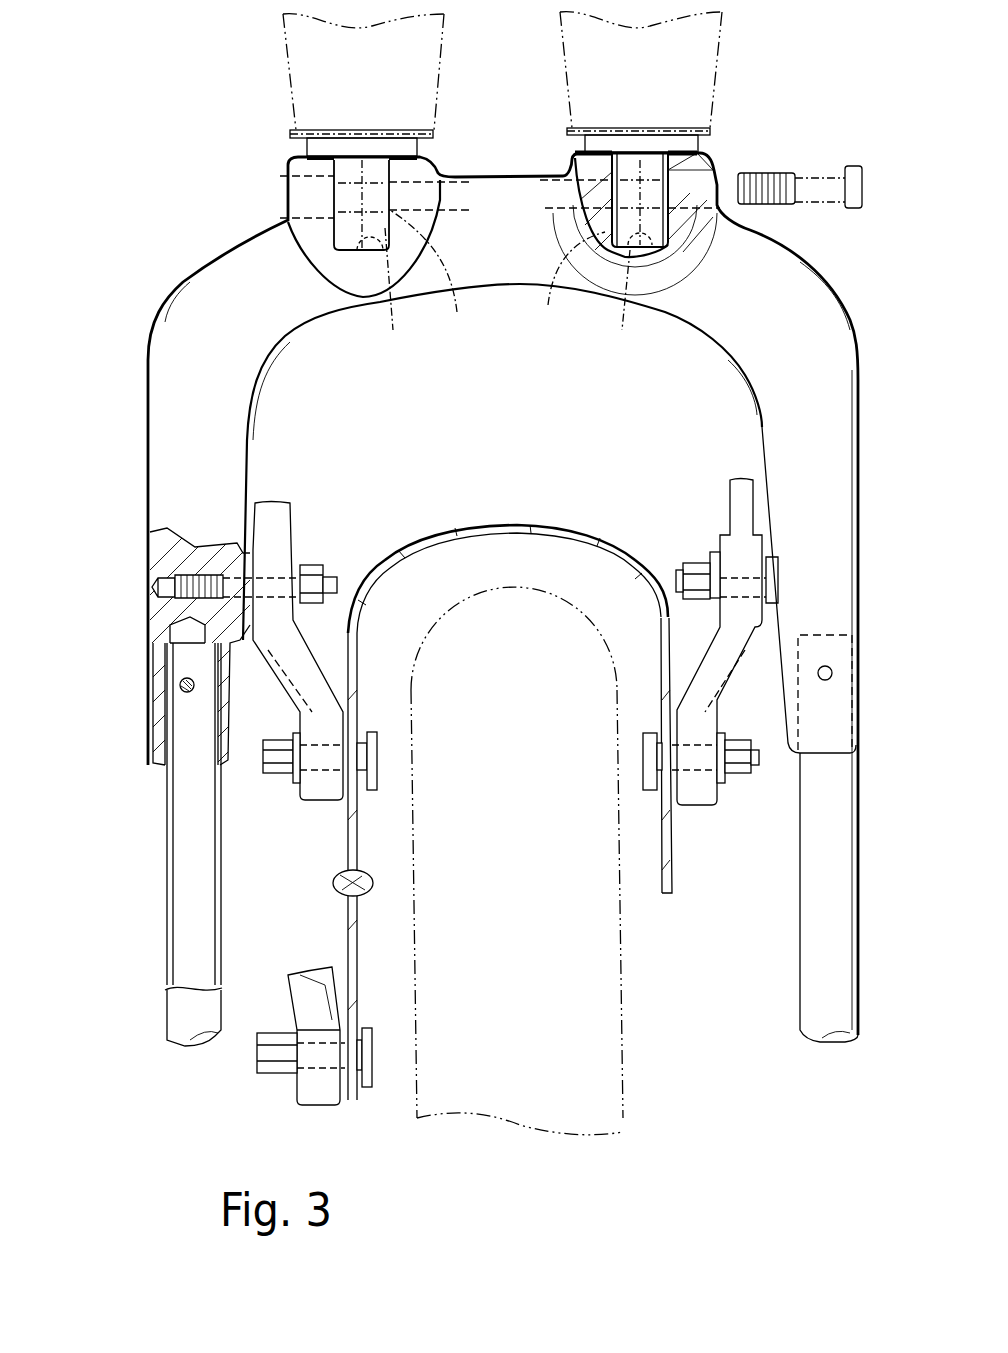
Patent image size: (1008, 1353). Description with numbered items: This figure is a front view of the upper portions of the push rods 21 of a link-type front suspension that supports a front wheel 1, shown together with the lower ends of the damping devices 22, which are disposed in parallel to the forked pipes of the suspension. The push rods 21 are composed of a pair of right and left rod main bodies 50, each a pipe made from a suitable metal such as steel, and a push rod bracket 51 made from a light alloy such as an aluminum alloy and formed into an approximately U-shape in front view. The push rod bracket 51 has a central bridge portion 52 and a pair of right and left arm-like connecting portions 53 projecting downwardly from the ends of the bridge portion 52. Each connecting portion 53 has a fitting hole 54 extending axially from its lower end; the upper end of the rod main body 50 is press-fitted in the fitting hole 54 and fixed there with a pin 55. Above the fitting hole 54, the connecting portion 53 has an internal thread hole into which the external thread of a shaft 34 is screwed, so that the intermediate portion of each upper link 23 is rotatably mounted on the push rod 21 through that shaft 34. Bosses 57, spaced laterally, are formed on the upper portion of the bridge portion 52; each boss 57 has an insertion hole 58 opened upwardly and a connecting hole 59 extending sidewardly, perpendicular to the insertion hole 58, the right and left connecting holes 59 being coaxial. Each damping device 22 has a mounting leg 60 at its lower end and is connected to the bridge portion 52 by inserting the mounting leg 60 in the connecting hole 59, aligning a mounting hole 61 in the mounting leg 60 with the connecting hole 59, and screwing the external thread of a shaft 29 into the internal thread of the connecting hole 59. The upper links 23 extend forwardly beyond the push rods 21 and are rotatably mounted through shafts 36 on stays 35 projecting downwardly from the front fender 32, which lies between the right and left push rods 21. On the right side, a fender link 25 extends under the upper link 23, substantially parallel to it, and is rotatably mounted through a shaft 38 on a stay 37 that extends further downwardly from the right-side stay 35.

The front wheel 1 is at (515, 590).
The push rods 21 is at (185, 165).
The damping devices 22 is at (283, 72).
The upper links 23 is at (280, 507).
The fender link 25 is at (305, 975).
The shaft 29 is at (815, 170).
The front fender 32 is at (480, 525).
The shaft 34 is at (338, 578).
The stays 35 is at (348, 845).
The shafts 36 is at (377, 757).
The stay 37 is at (362, 955).
The shaft 38 is at (372, 1052).
The rod main bodies 50 is at (167, 885).
The push rod bracket 51 is at (172, 287).
The bridge portion 52 is at (500, 283).
The connecting portions 53 is at (850, 525).
The fitting hole 54 is at (170, 638).
The pin 55 is at (194, 685).
The bosses 57 is at (292, 190).
The insertion hole 58 is at (370, 165).
The connecting hole 59 is at (285, 205).
The mounting leg 60 is at (504, 292).
The mounting hole 61 is at (445, 290).